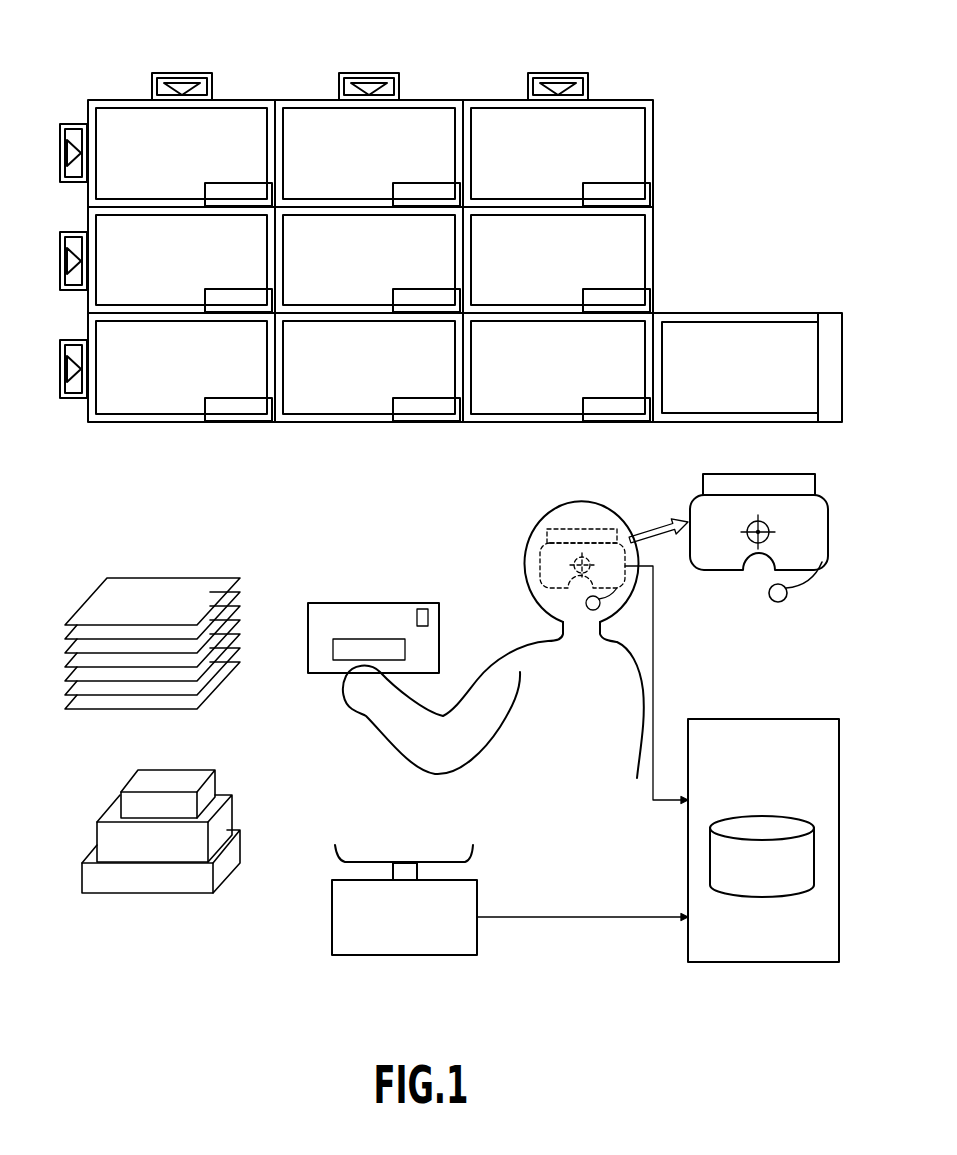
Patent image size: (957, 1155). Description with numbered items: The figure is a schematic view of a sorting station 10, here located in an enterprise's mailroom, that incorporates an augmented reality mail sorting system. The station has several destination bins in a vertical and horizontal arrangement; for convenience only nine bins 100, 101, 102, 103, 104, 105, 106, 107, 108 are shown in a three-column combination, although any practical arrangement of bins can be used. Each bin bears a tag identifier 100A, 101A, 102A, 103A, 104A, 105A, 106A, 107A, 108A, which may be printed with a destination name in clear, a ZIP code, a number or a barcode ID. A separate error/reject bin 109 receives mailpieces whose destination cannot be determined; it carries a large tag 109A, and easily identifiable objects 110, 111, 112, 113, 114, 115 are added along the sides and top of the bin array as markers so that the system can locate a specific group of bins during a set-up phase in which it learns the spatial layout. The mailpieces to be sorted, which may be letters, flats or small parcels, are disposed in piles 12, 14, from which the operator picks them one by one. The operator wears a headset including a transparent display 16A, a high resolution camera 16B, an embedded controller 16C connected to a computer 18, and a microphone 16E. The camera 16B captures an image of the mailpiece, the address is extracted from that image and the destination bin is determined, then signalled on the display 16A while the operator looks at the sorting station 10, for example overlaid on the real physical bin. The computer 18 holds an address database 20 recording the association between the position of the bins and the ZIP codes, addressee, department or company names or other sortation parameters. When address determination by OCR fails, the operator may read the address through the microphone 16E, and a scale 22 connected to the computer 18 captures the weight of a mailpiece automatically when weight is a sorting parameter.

The sorting station 10 is at (112, 98).
The pile of mailpieces 12 is at (97, 607).
The pile of mailpieces 14 is at (112, 833).
The transparent display 16A is at (723, 545).
The high resolution camera 16B is at (763, 530).
The embedded controller 16C is at (745, 485).
The microphone 16E is at (786, 601).
The computer 18 is at (762, 719).
The address database 20 is at (768, 819).
The scale 22 is at (417, 932).
The destination bin 100 is at (156, 373).
The destination bin 101 is at (343, 373).
The destination bin 102 is at (532, 373).
The destination bin 103 is at (156, 268).
The destination bin 104 is at (343, 268).
The destination bin 105 is at (532, 268).
The destination bin 106 is at (156, 157).
The destination bin 107 is at (343, 157).
The destination bin 108 is at (532, 157).
The error/reject bin 109 is at (720, 373).
The tag identifier 100A is at (238, 397).
The tag identifier 101A is at (426, 397).
The tag identifier 102A is at (616, 397).
The tag identifier 103A is at (243, 281).
The tag identifier 104A is at (431, 281).
The tag identifier 105A is at (621, 281).
The tag identifier 106A is at (238, 182).
The tag identifier 107A is at (426, 182).
The tag identifier 108A is at (616, 182).
The large tag 109A is at (827, 388).
The easily identifiable object 110 is at (65, 339).
The easily identifiable object 111 is at (65, 231).
The easily identifiable object 112 is at (65, 123).
The easily identifiable object 113 is at (190, 72).
The easily identifiable object 114 is at (377, 72).
The easily identifiable object 115 is at (566, 72).